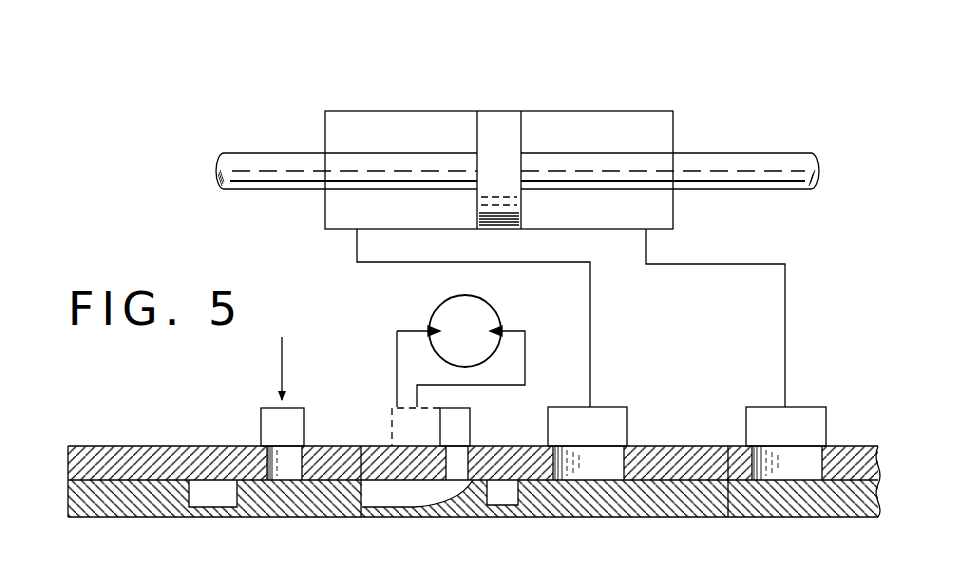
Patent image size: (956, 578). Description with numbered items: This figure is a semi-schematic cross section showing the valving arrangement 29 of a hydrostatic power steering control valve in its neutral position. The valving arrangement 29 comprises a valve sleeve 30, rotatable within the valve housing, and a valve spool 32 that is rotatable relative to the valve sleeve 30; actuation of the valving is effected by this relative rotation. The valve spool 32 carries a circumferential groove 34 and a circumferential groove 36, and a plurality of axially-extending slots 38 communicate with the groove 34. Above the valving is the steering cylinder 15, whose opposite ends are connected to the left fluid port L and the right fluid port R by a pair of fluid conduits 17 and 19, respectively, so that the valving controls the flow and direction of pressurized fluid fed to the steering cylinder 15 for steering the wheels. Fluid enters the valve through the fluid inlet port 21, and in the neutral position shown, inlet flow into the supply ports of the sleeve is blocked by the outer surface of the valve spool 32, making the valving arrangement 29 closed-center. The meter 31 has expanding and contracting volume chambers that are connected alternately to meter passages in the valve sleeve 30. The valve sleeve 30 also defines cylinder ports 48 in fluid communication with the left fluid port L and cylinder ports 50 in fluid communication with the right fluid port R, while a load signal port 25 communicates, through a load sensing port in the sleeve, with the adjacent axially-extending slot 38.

The steering cylinder 15 is at (490, 100).
The fluid conduit 17 is at (592, 304).
The fluid conduit 19 is at (788, 320).
The fluid inlet port 21 is at (297, 432).
The load signal port 25 is at (457, 430).
The valving arrangement 29 is at (48, 440).
The valve sleeve 30 is at (78, 465).
The meter 31 is at (483, 312).
The valve spool 32 is at (90, 508).
The circumferential groove 34 is at (218, 497).
The circumferential groove 36 is at (508, 498).
The axially-extending slots 38 is at (423, 495).
The cylinder ports 48 is at (607, 472).
The cylinder ports 50 is at (807, 473).
The left fluid port L is at (627, 427).
The right fluid port R is at (823, 427).